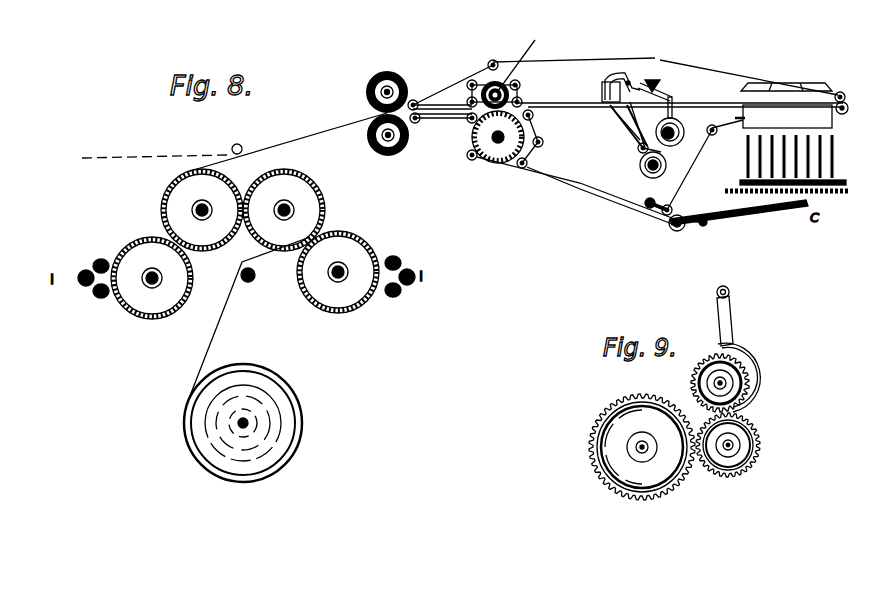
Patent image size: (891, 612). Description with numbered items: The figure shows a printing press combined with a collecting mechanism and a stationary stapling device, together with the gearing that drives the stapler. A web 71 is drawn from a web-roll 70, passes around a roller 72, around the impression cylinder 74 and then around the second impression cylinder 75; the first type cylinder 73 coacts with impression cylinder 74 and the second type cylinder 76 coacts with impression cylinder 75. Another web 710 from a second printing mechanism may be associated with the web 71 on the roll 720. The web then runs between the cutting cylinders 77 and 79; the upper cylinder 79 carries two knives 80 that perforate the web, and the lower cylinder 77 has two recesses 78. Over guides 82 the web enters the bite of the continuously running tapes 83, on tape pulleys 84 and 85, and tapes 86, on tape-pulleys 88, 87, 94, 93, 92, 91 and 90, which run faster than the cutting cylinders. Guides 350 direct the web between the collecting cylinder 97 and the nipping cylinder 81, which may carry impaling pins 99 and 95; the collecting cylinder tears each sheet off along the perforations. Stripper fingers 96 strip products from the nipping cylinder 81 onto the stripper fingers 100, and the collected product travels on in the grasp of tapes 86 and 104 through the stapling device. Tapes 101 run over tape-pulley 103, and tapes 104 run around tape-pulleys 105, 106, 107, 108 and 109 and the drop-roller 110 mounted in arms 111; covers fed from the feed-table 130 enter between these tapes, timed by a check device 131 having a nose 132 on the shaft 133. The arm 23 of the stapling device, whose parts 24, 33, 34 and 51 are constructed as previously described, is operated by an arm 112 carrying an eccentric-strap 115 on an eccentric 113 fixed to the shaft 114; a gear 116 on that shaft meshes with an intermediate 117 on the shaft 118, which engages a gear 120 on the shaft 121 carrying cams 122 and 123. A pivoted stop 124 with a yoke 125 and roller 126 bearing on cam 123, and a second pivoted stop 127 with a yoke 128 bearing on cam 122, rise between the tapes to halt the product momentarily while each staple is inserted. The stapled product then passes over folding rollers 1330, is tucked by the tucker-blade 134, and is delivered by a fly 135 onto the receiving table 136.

In FIG. 8, the web 710 is at (117, 157).
In FIG. 8, the roll 720 is at (240, 145).
In FIG. 8, the web 71 is at (297, 136).
In FIG. 8, the roller 72 is at (256, 276).
In FIG. 8, the first type cylinder 73 is at (338, 272).
In FIG. 8, the impression cylinder 74 is at (284, 210).
In FIG. 8, the impression cylinder 75 is at (202, 210).
In FIG. 8, the second type cylinder 76 is at (152, 278).
In FIG. 8, the web-roll 70 is at (292, 406).
In FIG. 8, the cutting cylinder 77 is at (400, 147).
In FIG. 8, the recesses 78 is at (373, 144).
In FIG. 8, the cutting cylinder 79 is at (366, 88).
In FIG. 8, the knives 80 is at (374, 76).
In FIG. 8, the nipping or biting cylinder 81 is at (370, 118).
In FIG. 8, the tapes 83 is at (438, 127).
In FIG. 8, the tape pulley 84 is at (440, 111).
In FIG. 8, the tape pulley 85 is at (464, 118).
In FIG. 8, the tapes 86 is at (733, 66).
In FIG. 8, the tape-pulley 87 is at (464, 102).
In FIG. 8, the tape-pulley 88 is at (464, 85).
In FIG. 8, the belt 350 is at (475, 82).
In FIG. 8, the tape-pulley 90 is at (499, 58).
In FIG. 8, the tape-pulley 91 is at (664, 55).
In FIG. 8, the tape-pulley 92 is at (498, 137).
In FIG. 8, the tape-pulley 93 is at (527, 97).
In FIG. 8, the tape-pulley 94 is at (524, 80).
In FIG. 8, the impaling pins 95 is at (490, 75).
In FIG. 8, the stripper fingers 96 is at (540, 107).
In FIG. 8, the collecting cylinder 97 is at (463, 157).
In FIG. 8, the impaling pins 99 is at (555, 158).
In FIG. 8, the stripper fingers 100 is at (547, 128).
In FIG. 8, the tapes 101 is at (578, 195).
In FIG. 8, the tape-pulley 103 is at (470, 160).
In FIG. 8, the tapes 104 is at (712, 107).
In FIG. 8, the tape-pulley 105 is at (544, 143).
In FIG. 8, the tape-pulley 106 is at (528, 165).
In FIG. 8, the tape-pulley 107 is at (534, 115).
In FIG. 8, the lever 51 is at (551, 81).
In FIG. 8, the hook 33 is at (619, 78).
In FIG. 8, the block 34 is at (602, 88).
In FIG. 8, the arm 23 is at (662, 94).
In FIG. 8, the cam 24 is at (659, 81).
In FIG. 8, the guides 82 is at (850, 95).
In FIG. 8, the tape-pulley 108 is at (848, 109).
In FIG. 8, the folding rollers 1330 is at (783, 116).
In FIG. 8, the tape-pulley 109 is at (715, 135).
In FIG. 8, the drop-roller 110 is at (674, 208).
In FIG. 8, the arms 111 is at (655, 203).
In FIG. 8, the arm 112 is at (673, 104).
In FIG. 9, the arm 112 is at (735, 312).
In FIG. 8, the eccentric 113 is at (681, 127).
In FIG. 9, the eccentric 113 is at (757, 375).
In FIG. 8, the shaft 114 is at (664, 125).
In FIG. 9, the shaft 114 is at (708, 386).
In FIG. 8, the eccentric-strap 115 is at (681, 139).
In FIG. 9, the eccentric-strap 115 is at (752, 357).
In FIG. 9, the gear 116 is at (748, 392).
In FIG. 9, the intermediate 117 is at (760, 438).
In FIG. 9, the shaft 118 is at (742, 449).
In FIG. 9, the gear 120 is at (678, 485).
In FIG. 8, the shaft 121 is at (646, 166).
In FIG. 9, the shaft 121 is at (650, 447).
In FIG. 8, the cam 122 is at (652, 176).
In FIG. 8, the cam 123 is at (666, 165).
In FIG. 8, the pivoted stop 124 is at (612, 112).
In FIG. 8, the yoke 125 is at (666, 148).
In FIG. 8, the roller 126 is at (638, 149).
In FIG. 8, the pivoted stop 127 is at (625, 126).
In FIG. 8, the yoke 128 is at (631, 125).
In FIG. 8, the feed-table 130 is at (762, 212).
In FIG. 8, the check device 131 is at (690, 227).
In FIG. 8, the nose 132 is at (672, 224).
In FIG. 8, the shaft 133 is at (707, 223).
In FIG. 8, the tucker-blade 134 is at (788, 84).
In FIG. 8, the fly 135 is at (822, 157).
In FIG. 8, the receiving table 136 is at (838, 193).